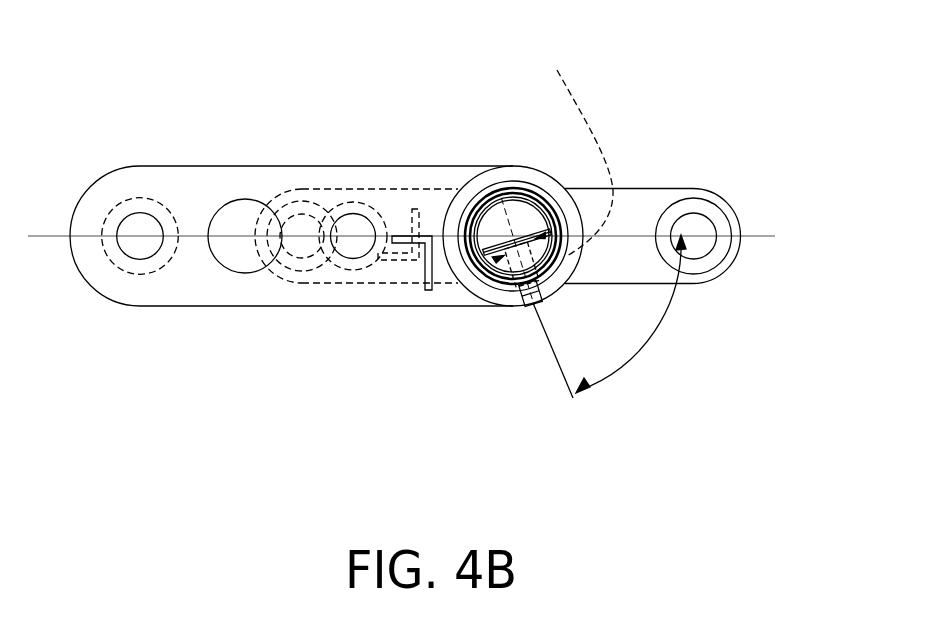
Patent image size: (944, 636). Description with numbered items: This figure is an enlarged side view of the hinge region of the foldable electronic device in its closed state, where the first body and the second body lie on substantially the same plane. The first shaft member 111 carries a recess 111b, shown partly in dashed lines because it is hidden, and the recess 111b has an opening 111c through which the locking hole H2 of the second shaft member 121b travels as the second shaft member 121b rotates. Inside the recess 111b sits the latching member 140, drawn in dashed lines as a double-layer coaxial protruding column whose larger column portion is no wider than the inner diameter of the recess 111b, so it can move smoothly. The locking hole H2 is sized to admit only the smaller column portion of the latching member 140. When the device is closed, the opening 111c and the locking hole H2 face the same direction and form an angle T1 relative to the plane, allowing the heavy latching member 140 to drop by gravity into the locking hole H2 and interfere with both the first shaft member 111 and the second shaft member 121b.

The second shaft member 121b is at (327, 165).
The first shaft member 111 is at (630, 189).
The opening 111c is at (575, 150).
The recess 111b is at (470, 262).
The latching member 140 is at (493, 287).
The locking hole H2 is at (528, 299).
The angle T1 is at (631, 314).